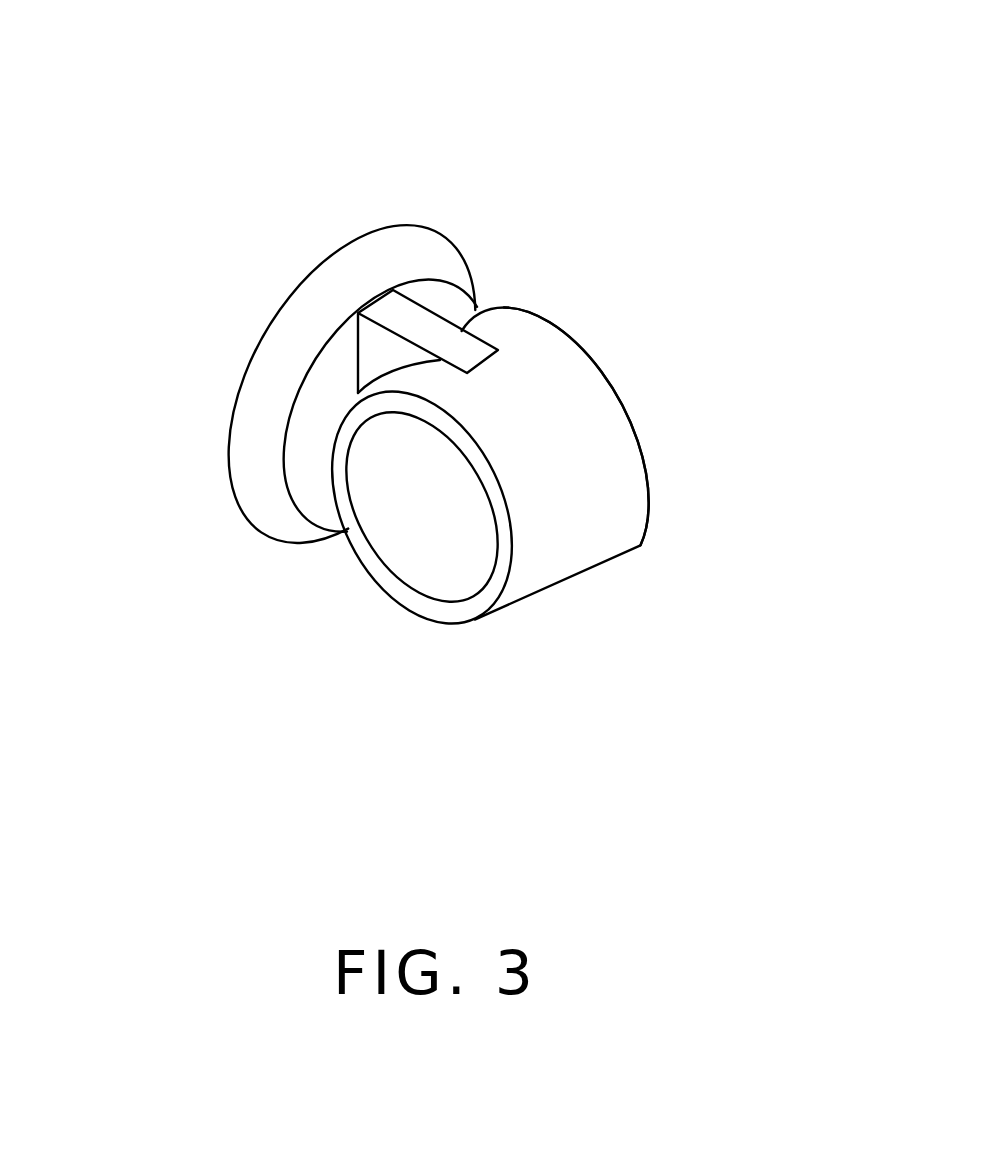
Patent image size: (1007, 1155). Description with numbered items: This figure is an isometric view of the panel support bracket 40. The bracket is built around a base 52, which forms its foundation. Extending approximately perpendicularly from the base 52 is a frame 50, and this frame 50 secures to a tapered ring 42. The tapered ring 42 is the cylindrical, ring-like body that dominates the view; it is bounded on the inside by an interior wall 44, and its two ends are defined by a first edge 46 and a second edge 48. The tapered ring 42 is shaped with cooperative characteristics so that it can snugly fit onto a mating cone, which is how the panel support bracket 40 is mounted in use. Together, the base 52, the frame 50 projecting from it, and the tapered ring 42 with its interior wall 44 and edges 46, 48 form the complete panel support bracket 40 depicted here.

The panel support bracket 40 is at (250, 147).
The tapered ring 42 is at (575, 430).
The interior wall 44 is at (407, 537).
The edge 46 is at (468, 608).
The edge 48 is at (650, 520).
The frame 50 is at (403, 313).
The base 52 is at (265, 442).